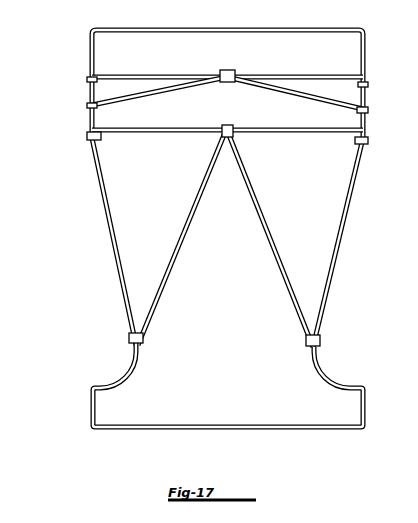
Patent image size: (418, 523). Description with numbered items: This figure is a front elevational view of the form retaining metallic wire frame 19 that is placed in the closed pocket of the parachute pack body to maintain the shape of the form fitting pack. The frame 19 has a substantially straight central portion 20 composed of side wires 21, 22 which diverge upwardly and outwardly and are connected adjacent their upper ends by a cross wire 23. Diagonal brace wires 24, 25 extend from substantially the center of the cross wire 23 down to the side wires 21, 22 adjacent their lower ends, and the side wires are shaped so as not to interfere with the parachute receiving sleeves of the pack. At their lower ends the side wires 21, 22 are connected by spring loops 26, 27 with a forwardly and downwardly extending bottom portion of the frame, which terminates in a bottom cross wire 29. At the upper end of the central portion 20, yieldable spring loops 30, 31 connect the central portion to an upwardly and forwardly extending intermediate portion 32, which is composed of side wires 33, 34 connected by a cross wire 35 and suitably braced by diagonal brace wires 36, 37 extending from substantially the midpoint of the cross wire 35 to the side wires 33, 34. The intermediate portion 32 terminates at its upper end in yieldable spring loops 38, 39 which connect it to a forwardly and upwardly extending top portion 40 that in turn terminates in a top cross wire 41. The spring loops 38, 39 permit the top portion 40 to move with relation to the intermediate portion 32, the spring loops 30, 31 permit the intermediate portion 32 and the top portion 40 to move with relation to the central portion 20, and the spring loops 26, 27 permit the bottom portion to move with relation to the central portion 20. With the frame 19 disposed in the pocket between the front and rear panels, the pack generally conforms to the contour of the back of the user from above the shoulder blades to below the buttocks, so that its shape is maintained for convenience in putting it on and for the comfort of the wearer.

The metallic wire frame 19 is at (346, 245).
The central portion 20 is at (127, 312).
The side wire 21 is at (119, 233).
The side wire 22 is at (355, 189).
The cross wire 23 is at (288, 133).
The diagonal brace wire 24 is at (188, 196).
The diagonal brace wire 25 is at (272, 205).
The spring loop 26 is at (90, 410).
The spring loop 27 is at (365, 408).
The bottom cross wire 29 is at (254, 429).
The spring loop 30 is at (90, 118).
The spring loop 31 is at (367, 121).
The intermediate portion 32 is at (369, 92).
The side wire 33 is at (90, 64).
The side wire 34 is at (367, 63).
The cross wire 35 is at (312, 76).
The diagonal brace wire 36 is at (155, 90).
The diagonal brace wire 37 is at (298, 89).
The spring loop 38 is at (90, 39).
The spring loop 39 is at (367, 40).
The top portion 40 is at (368, 30).
The top cross wire 41 is at (292, 28).